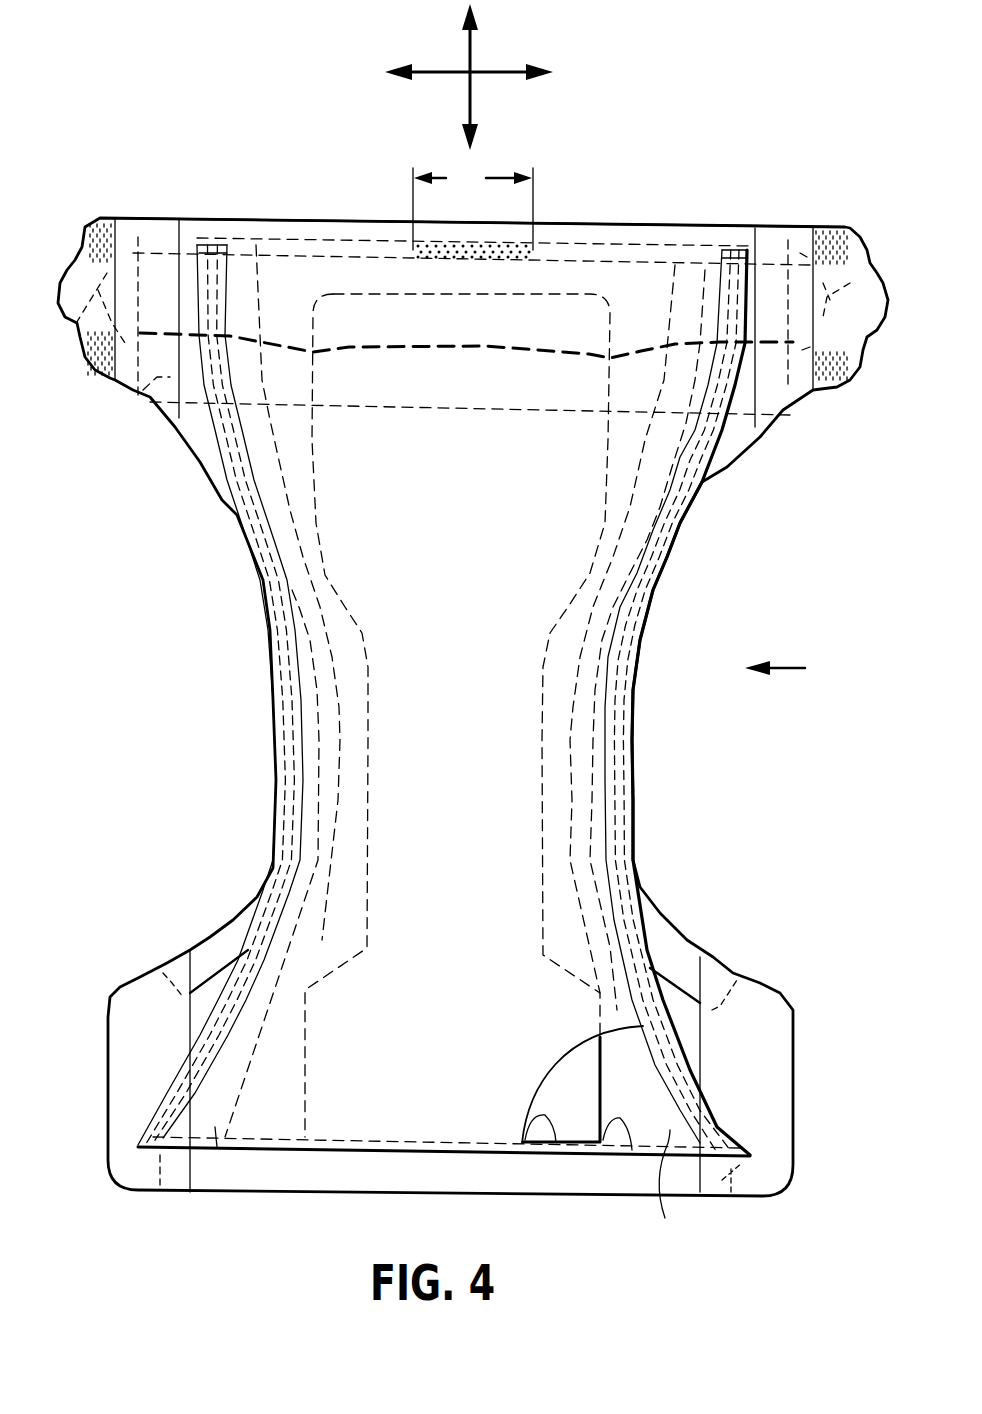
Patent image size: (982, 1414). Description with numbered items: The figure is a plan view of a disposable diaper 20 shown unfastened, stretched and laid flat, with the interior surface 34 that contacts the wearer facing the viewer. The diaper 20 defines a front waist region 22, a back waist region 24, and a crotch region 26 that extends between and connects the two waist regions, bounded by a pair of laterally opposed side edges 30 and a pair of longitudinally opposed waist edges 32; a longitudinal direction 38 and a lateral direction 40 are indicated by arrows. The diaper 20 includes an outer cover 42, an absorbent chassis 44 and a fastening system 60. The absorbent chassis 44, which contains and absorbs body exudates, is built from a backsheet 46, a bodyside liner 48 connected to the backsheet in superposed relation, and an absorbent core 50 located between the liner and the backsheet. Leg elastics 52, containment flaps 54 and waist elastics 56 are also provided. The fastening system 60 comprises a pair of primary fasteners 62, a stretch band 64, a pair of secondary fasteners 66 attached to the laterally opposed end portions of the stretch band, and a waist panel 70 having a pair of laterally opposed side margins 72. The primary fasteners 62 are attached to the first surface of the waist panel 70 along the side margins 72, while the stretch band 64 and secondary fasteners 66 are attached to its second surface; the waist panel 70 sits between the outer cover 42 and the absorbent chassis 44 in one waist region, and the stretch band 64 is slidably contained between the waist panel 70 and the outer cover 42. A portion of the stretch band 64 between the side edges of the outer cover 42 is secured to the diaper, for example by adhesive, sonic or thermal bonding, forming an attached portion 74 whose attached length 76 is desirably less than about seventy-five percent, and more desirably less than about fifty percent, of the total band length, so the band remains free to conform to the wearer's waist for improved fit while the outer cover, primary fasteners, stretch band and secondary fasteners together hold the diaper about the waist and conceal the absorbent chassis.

The disposable diaper 20 is at (205, 58).
The front waist region 22 is at (790, 967).
The back waist region 24 is at (817, 430).
The crotch region 26 is at (790, 671).
The side edges 30 is at (263, 608).
The waist edges 32 is at (327, 215).
The interior surface 34 is at (343, 503).
The longitudinal direction 38 is at (473, 58).
The lateral direction 40 is at (493, 78).
The outer cover 42 is at (685, 1027).
The absorbent chassis 44 is at (217, 1148).
The backsheet 46 is at (678, 1185).
The bodyside liner 48 is at (556, 1142).
The absorbent core 50 is at (632, 1150).
The leg elastics 52 is at (215, 947).
The containment flaps 54 is at (642, 942).
The waist elastics 56 is at (613, 230).
The fastening system 60 is at (100, 403).
The primary fasteners 62 is at (100, 238).
The stretch band 64 is at (153, 263).
The secondary fasteners 66 is at (72, 337).
The waist panel 70 is at (476, 412).
The side margins 72 is at (805, 403).
The attached portion 74 is at (482, 242).
The attached length 76 is at (473, 207).